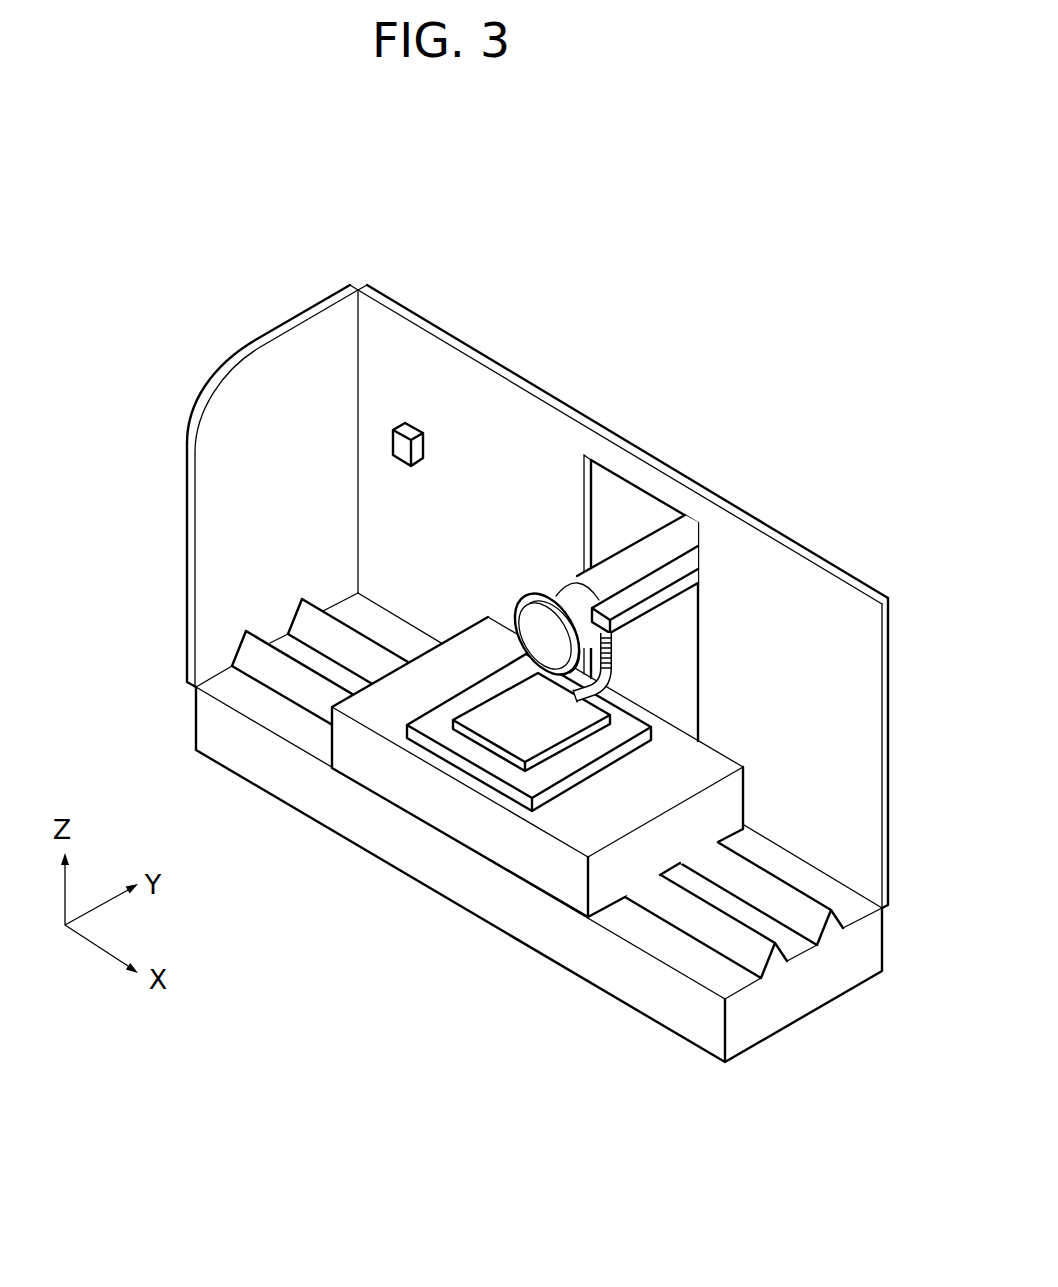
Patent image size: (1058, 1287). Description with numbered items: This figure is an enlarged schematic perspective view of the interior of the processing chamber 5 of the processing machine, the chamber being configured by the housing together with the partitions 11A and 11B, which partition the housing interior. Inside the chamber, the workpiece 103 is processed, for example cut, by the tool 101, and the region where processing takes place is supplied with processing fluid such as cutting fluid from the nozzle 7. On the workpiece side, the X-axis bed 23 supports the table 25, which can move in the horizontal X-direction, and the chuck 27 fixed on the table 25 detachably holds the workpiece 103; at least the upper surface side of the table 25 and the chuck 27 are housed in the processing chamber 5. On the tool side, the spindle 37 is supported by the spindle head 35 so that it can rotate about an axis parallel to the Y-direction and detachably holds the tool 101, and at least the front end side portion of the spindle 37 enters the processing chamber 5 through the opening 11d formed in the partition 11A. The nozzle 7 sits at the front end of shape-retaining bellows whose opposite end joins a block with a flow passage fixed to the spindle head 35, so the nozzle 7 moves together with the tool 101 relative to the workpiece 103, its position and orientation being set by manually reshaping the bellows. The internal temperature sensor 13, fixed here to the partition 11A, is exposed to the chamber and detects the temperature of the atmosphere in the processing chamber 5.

The processing chamber 5 is at (295, 405).
The nozzle 7 is at (580, 697).
The partition 11A is at (803, 577).
The partition 11B is at (220, 510).
The opening 11d is at (694, 641).
The internal temperature sensor 13 is at (405, 426).
The X-axis bed 23 is at (652, 993).
The table 25 is at (563, 887).
The chuck 27 is at (425, 743).
The spindle head 35 is at (653, 553).
The spindle 37 is at (575, 600).
The tool 101 is at (528, 608).
The workpiece 103 is at (497, 728).